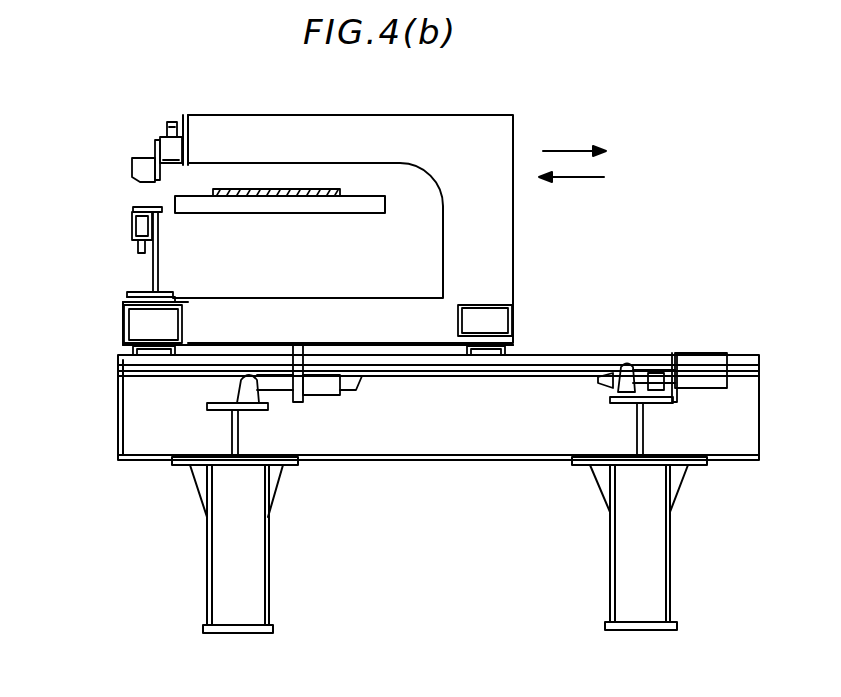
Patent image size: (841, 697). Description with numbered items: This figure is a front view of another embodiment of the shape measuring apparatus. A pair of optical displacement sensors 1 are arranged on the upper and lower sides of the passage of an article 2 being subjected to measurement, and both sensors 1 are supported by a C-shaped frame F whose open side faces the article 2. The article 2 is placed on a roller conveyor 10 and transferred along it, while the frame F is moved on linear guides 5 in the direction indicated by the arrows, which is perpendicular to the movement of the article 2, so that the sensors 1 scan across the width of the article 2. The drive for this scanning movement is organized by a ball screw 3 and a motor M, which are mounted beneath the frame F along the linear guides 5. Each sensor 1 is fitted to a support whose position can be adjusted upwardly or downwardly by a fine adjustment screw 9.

The optical displacement sensor 1 is at (133, 222).
The article 2 is at (313, 188).
The ball screw 3 is at (351, 384).
The linear guide 5 is at (570, 354).
The fine adjustment screw 9 is at (166, 117).
The roller conveyor 10 is at (280, 210).
The C-shaped frame F is at (460, 117).
The motor M is at (699, 356).